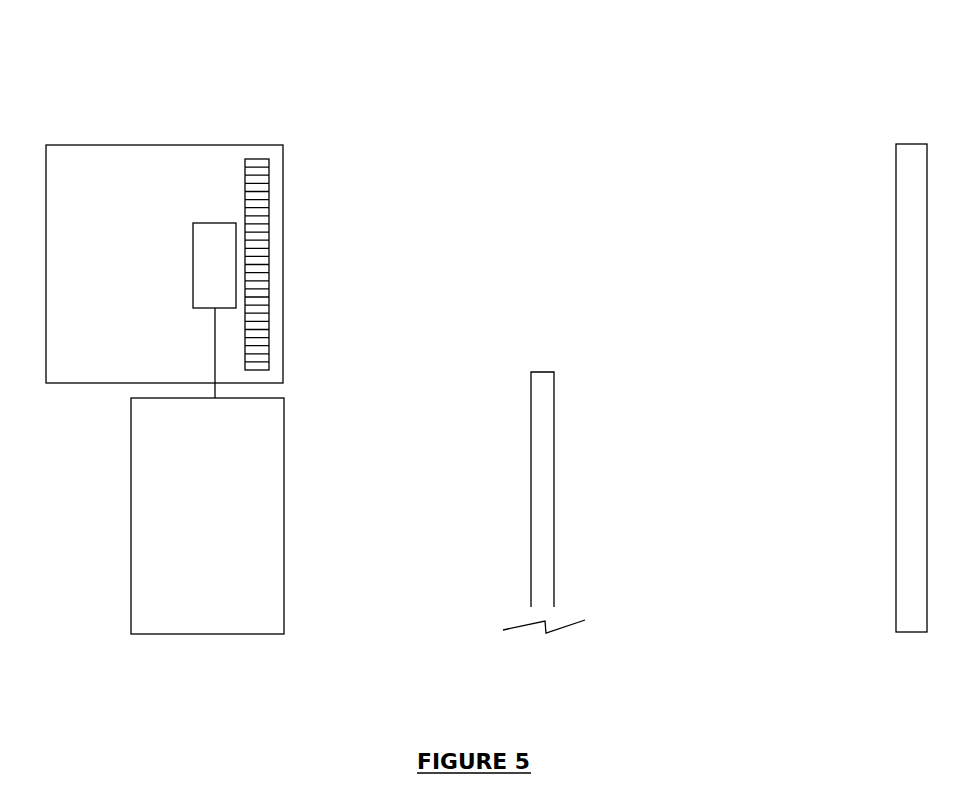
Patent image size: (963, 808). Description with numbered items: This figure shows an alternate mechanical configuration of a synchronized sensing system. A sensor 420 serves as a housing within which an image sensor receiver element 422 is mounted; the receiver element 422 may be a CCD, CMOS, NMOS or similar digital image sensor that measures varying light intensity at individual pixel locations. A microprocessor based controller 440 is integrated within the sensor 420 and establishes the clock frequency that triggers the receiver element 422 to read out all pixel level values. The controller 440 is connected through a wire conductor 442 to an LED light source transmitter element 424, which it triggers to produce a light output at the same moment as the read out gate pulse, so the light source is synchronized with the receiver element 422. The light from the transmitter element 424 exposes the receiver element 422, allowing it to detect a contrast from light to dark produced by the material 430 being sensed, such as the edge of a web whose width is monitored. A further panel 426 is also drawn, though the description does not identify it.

The sensor 420 is at (164, 143).
The image sensor receiver element 422 is at (272, 168).
The controller 440 is at (216, 210).
The wire conductor 442 is at (206, 334).
The LED light source transmitter element 424 is at (206, 649).
The material 430 is at (553, 354).
The panel 426 is at (900, 650).